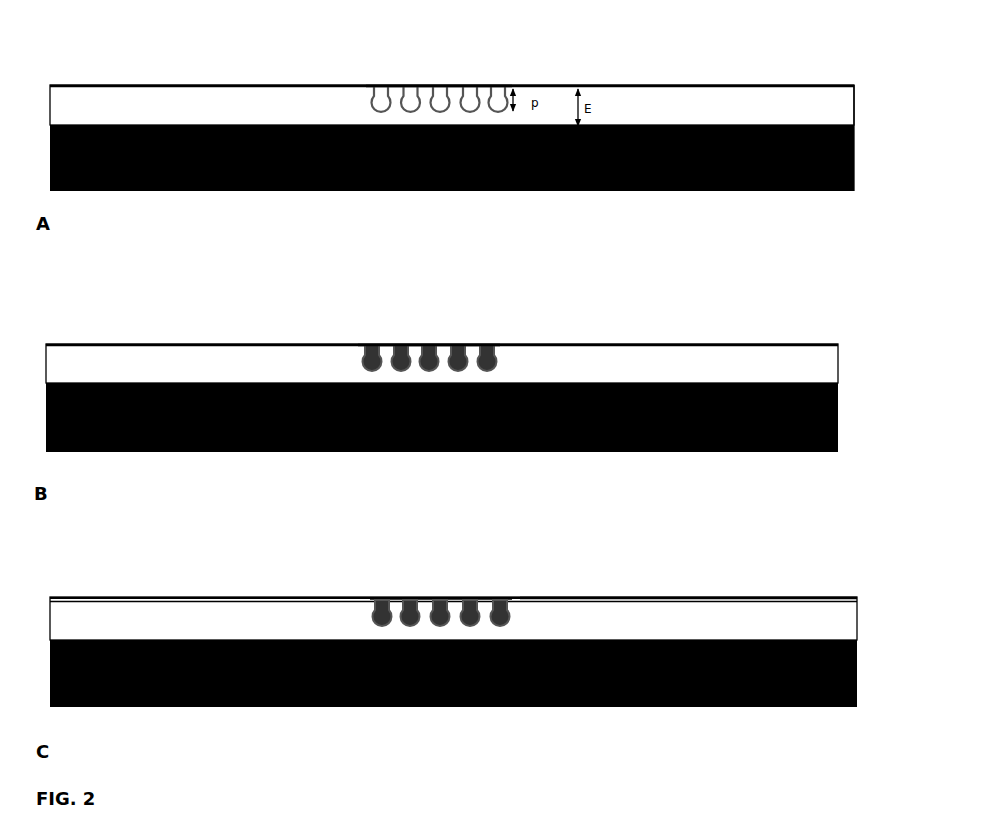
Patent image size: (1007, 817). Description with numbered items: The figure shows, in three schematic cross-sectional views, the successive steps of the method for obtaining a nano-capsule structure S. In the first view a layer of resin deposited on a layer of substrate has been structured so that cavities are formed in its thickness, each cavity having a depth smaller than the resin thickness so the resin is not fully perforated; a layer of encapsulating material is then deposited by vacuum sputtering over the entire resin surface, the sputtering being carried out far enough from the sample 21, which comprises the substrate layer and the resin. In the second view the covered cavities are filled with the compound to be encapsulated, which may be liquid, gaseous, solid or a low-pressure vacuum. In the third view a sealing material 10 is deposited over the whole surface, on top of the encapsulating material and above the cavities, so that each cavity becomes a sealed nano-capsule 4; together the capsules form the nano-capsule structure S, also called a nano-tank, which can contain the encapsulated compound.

The nano-capsule 4 is at (370, 618).
The sealing material 10 is at (538, 593).
The sample 21 is at (857, 125).
The nano-capsule structure S is at (420, 595).